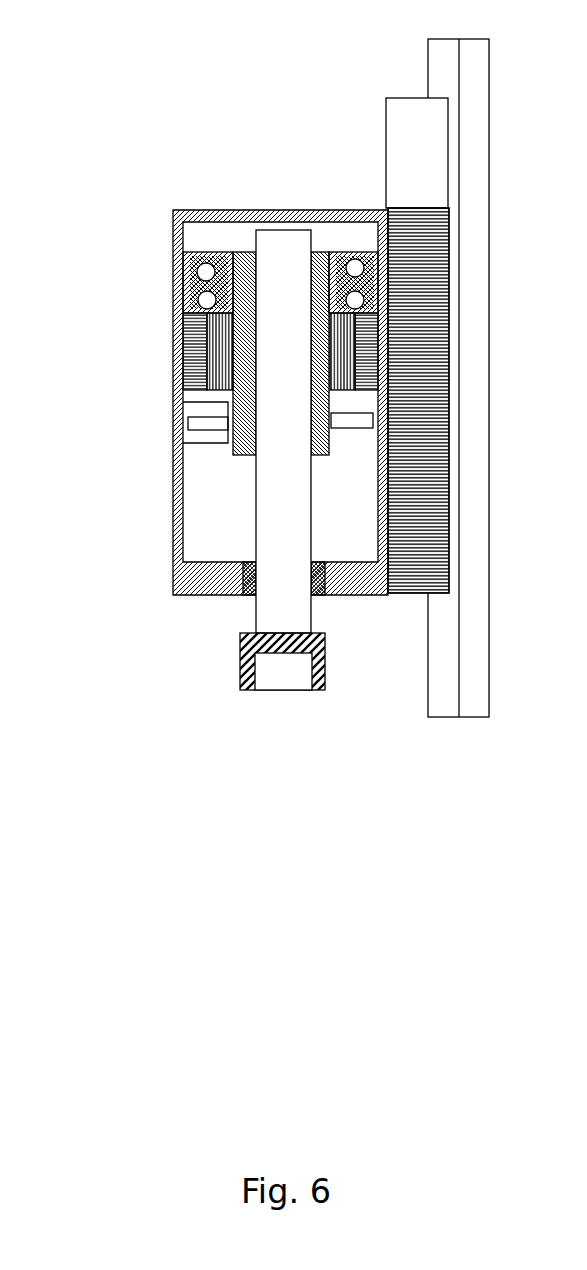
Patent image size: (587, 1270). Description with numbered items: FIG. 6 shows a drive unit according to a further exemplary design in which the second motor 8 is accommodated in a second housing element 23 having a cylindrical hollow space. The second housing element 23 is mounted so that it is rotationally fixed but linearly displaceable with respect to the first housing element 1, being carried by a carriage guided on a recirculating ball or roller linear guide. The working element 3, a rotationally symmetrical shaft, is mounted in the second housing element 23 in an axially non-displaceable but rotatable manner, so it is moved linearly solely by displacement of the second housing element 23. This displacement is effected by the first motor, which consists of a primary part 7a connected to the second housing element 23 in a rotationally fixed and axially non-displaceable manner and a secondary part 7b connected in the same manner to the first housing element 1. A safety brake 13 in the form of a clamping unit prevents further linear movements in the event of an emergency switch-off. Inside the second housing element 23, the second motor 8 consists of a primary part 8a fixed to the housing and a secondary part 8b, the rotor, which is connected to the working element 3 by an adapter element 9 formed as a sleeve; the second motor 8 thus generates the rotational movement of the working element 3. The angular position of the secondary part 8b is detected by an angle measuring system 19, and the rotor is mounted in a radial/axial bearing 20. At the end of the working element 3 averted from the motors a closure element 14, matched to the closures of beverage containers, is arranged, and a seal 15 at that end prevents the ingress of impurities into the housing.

The first housing element 1 is at (295, 362).
The working element 3 is at (280, 518).
The primary part 7a is at (414, 235).
The secondary part 7b is at (440, 70).
The second motor 8 is at (199, 341).
The primary part 8a is at (192, 373).
The secondary part 8b is at (220, 333).
The adapter element 9 is at (245, 307).
The safety brake 13 is at (411, 137).
The closure element 14 is at (278, 672).
The seal 15 is at (255, 578).
The angle measuring system 19 is at (205, 423).
The radial/axial bearing 20 is at (202, 272).
The second housing element 23 is at (228, 215).